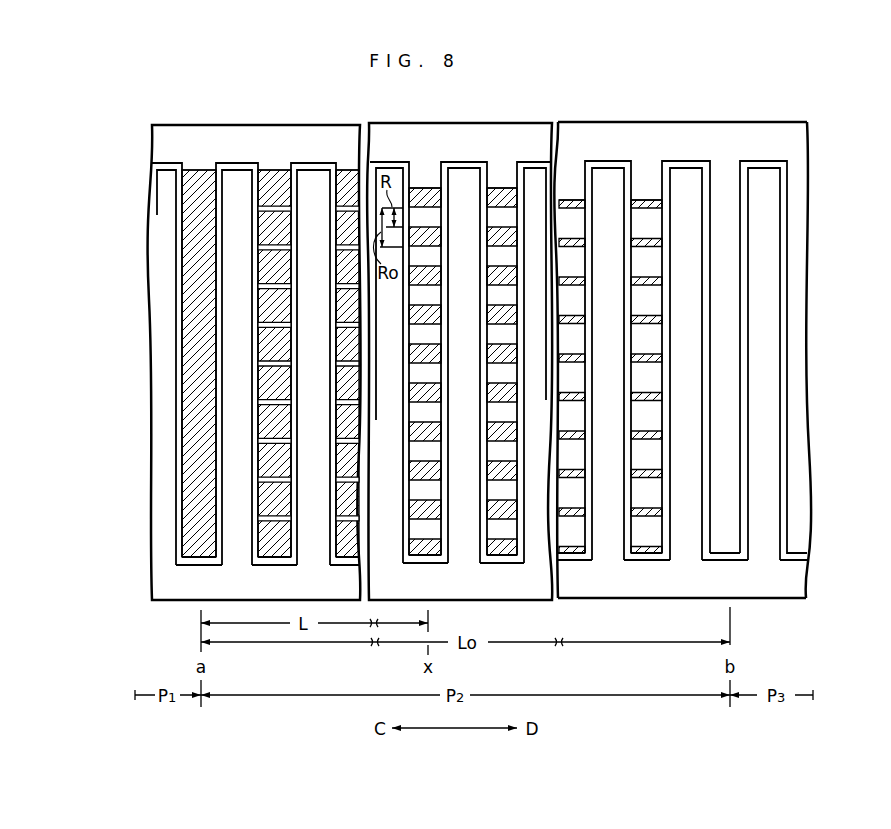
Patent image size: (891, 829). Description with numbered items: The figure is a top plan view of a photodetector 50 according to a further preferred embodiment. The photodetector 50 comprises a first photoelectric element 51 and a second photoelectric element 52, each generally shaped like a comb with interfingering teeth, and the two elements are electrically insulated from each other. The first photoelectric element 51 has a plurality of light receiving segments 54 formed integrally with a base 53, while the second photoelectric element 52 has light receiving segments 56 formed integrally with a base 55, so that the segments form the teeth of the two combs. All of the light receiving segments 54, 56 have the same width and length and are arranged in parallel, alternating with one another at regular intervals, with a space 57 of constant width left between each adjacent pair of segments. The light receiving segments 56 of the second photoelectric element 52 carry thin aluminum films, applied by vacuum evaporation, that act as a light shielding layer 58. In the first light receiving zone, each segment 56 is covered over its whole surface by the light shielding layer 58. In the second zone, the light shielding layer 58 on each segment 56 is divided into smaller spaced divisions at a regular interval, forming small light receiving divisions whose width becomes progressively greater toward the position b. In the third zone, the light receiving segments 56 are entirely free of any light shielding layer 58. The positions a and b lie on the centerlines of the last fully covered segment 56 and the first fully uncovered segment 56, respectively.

The photodetector 50 is at (723, 120).
The first photoelectric element 51 is at (806, 600).
The second photoelectric element 52 is at (786, 121).
The base 53 is at (760, 600).
The light receiving segments 54 is at (228, 430).
The base 55 is at (613, 133).
The light receiving segments 56 is at (217, 362).
The space 57 is at (180, 474).
The light shielding layer 58 is at (199, 168).